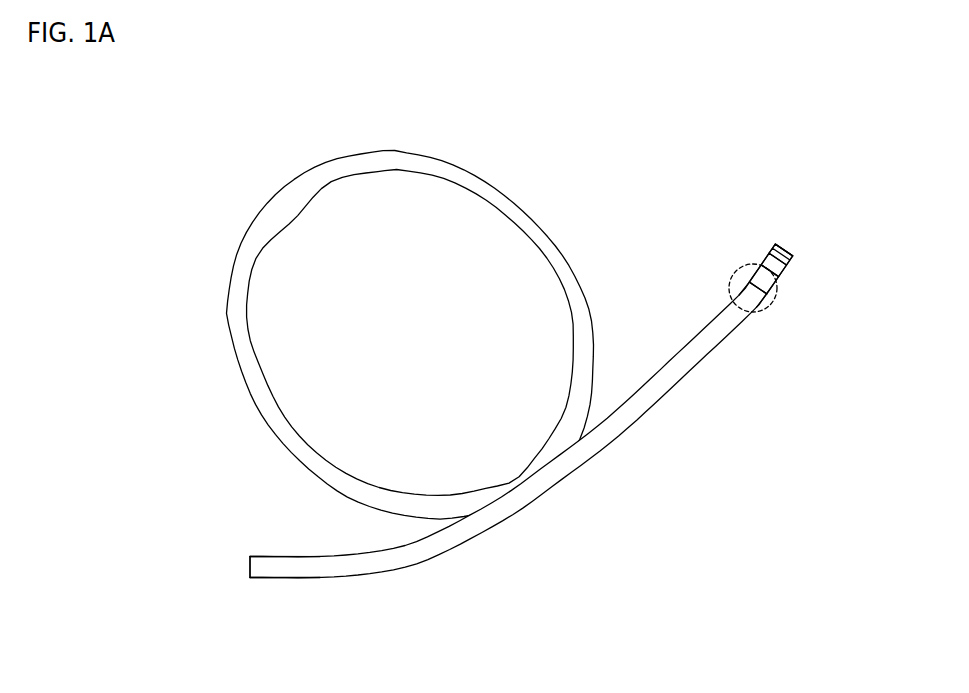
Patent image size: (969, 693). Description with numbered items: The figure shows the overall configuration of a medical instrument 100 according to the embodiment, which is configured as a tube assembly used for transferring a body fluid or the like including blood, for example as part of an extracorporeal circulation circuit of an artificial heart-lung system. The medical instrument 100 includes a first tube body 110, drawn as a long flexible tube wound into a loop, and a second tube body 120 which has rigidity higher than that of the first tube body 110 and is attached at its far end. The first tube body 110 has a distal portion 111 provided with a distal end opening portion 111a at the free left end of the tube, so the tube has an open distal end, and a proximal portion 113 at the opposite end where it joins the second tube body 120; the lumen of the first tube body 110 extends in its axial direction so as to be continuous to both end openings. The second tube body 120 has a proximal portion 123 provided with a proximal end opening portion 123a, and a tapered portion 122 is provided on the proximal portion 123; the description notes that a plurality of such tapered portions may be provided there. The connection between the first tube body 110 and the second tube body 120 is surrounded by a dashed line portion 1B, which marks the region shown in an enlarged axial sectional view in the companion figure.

The medical instrument 100 is at (159, 118).
The first tube body 110 is at (402, 560).
The distal portion 111 is at (263, 587).
The distal end opening portion 111a is at (250, 567).
The proximal portion 113 is at (762, 309).
The second tube body 120 is at (777, 278).
The tapered portion 122 is at (777, 248).
The proximal portion 123 is at (797, 260).
The proximal end opening portion 123a is at (786, 248).
The dashed line portion 1B is at (742, 264).